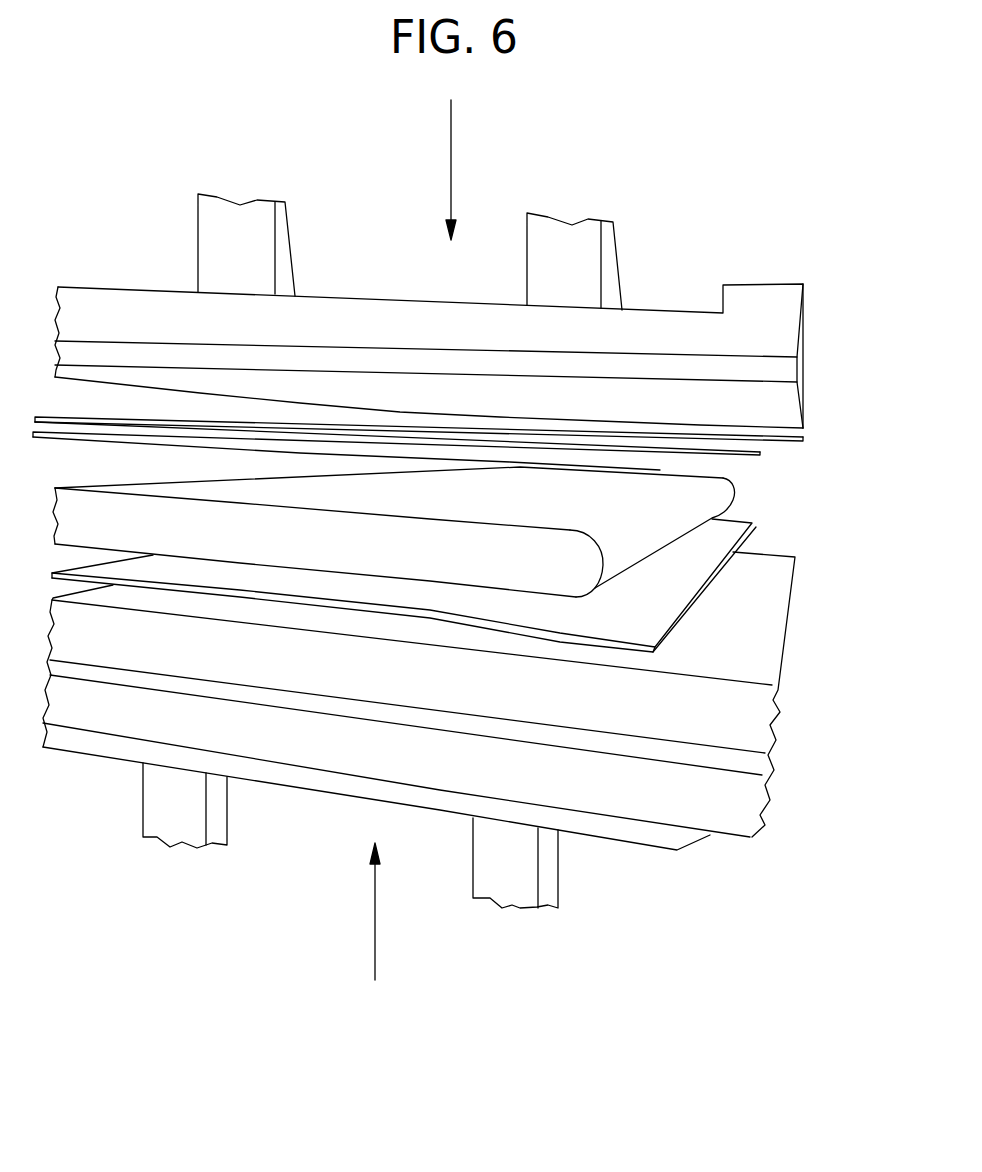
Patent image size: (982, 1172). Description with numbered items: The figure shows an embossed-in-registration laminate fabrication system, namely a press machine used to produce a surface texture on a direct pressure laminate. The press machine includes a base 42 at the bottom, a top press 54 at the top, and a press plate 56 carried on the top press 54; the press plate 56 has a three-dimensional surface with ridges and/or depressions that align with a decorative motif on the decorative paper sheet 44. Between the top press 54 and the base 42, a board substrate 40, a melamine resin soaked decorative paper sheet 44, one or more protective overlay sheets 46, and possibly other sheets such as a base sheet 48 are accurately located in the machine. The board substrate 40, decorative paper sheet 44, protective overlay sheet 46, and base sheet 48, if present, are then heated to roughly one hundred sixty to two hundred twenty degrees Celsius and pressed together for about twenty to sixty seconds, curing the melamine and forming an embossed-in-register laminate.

The board substrate 40 is at (680, 512).
The base 42 is at (110, 760).
The decorative paper sheet 44 is at (738, 462).
The protective overlay sheet 46 is at (803, 437).
The base sheet 48 is at (715, 543).
The top press 54 is at (332, 297).
The press plate 56 is at (800, 390).